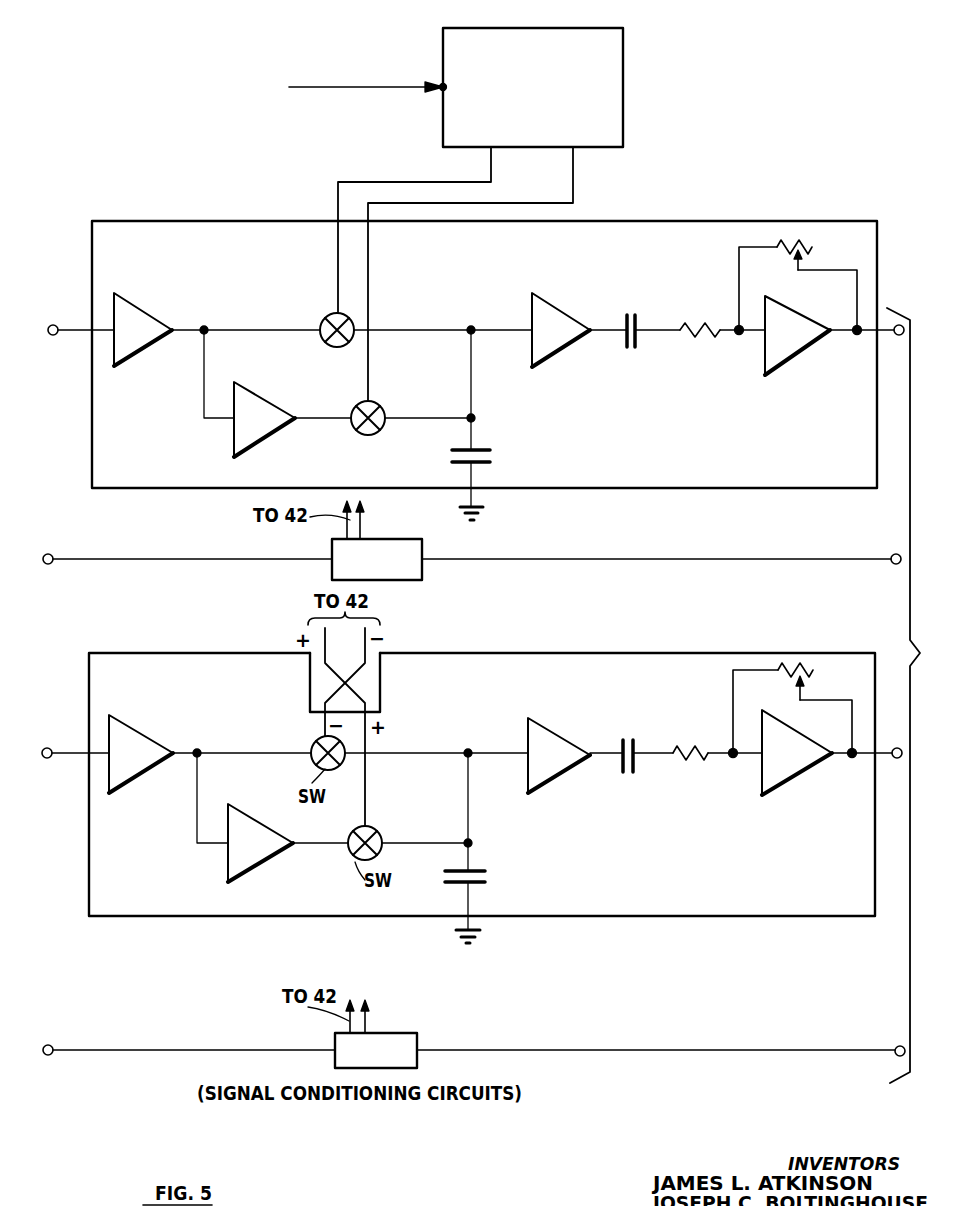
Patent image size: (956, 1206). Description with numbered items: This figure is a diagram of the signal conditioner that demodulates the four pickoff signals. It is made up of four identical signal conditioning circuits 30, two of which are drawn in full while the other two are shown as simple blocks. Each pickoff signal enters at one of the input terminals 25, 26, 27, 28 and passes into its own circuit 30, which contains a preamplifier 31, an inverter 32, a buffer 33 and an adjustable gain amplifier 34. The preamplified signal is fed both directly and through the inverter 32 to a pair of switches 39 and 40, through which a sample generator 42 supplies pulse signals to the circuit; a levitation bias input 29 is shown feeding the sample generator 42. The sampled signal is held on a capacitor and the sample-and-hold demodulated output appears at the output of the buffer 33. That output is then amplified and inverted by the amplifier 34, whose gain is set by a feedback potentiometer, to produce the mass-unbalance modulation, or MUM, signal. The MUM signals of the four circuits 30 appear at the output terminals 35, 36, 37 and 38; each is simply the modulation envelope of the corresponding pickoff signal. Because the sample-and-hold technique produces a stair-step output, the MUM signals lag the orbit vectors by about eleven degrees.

The input terminal 25 is at (50, 335).
The input terminal 26 is at (46, 564).
The input terminal 27 is at (47, 758).
The input terminal 28 is at (51, 1046).
The levitation bias input 29 is at (440, 85).
The signal conditioning circuit 30 is at (180, 230).
The preamplifier 31 is at (132, 327).
The inverter 32 is at (247, 410).
The buffer 33 is at (552, 335).
The adjustable gain amplifier 34 is at (778, 330).
The terminal 35 is at (898, 336).
The terminal 36 is at (893, 564).
The terminal 37 is at (897, 758).
The terminal 38 is at (897, 1056).
The switch 39 is at (322, 320).
The switch 40 is at (375, 407).
The sample generator 42 is at (598, 117).